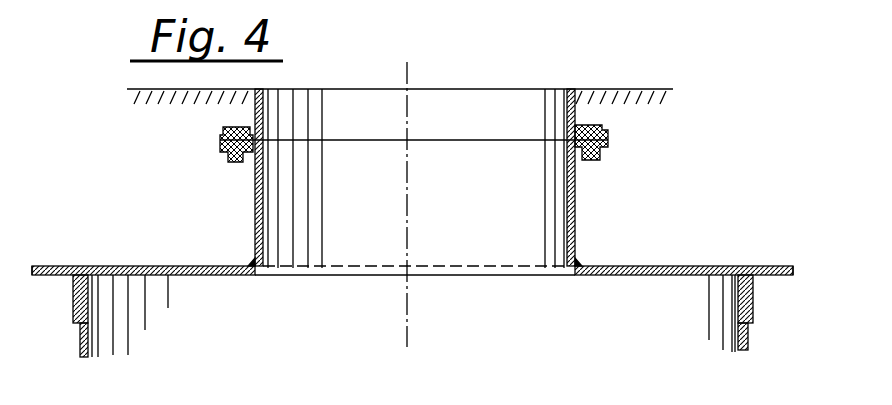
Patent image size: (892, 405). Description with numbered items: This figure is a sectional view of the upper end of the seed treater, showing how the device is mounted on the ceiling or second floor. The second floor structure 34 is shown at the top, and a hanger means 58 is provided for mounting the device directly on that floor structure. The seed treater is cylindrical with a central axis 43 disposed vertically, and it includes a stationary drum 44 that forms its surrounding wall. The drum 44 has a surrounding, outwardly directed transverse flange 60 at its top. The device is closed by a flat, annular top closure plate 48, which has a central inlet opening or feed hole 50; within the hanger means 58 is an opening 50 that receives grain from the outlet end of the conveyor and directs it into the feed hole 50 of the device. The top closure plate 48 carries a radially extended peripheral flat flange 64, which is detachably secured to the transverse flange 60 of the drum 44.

The second floor structure 34 is at (162, 100).
The feed hole 50 is at (461, 113).
The hanger means 58 is at (578, 111).
The central axis 43 is at (410, 308).
The top closure plate 48 is at (635, 265).
The peripheral flat flange 64 is at (50, 266).
The transverse flange 60 is at (793, 278).
The stationary drum 44 is at (745, 340).